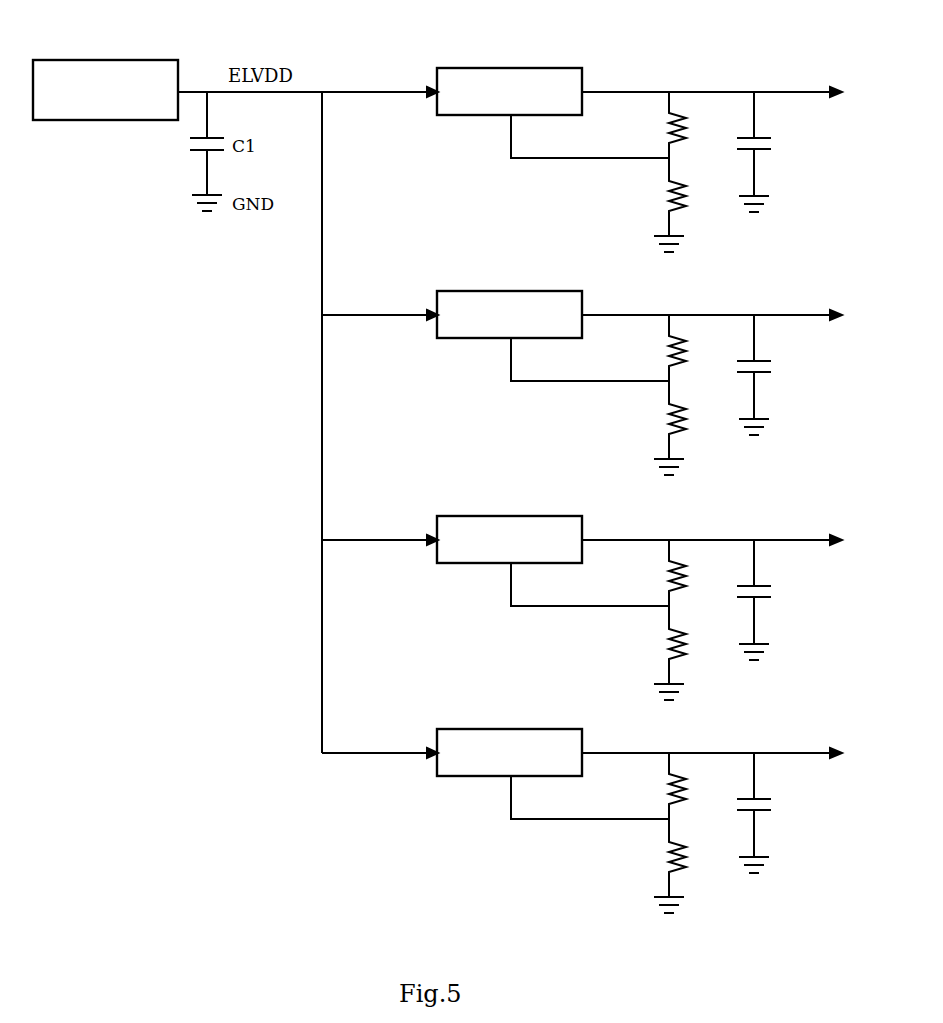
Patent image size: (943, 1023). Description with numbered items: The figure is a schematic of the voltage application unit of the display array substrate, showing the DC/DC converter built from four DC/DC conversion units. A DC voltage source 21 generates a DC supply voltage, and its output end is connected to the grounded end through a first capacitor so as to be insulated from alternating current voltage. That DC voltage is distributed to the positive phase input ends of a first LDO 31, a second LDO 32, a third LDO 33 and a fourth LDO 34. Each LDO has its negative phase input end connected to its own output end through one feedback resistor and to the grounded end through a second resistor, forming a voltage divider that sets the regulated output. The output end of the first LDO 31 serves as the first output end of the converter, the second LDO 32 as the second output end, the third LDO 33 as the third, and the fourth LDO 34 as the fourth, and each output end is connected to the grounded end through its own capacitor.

The DC voltage source 21 is at (176, 37).
The first LDO 31 is at (640, 45).
The second LDO 32 is at (640, 268).
The third LDO 33 is at (640, 493).
The fourth LDO 34 is at (640, 706).